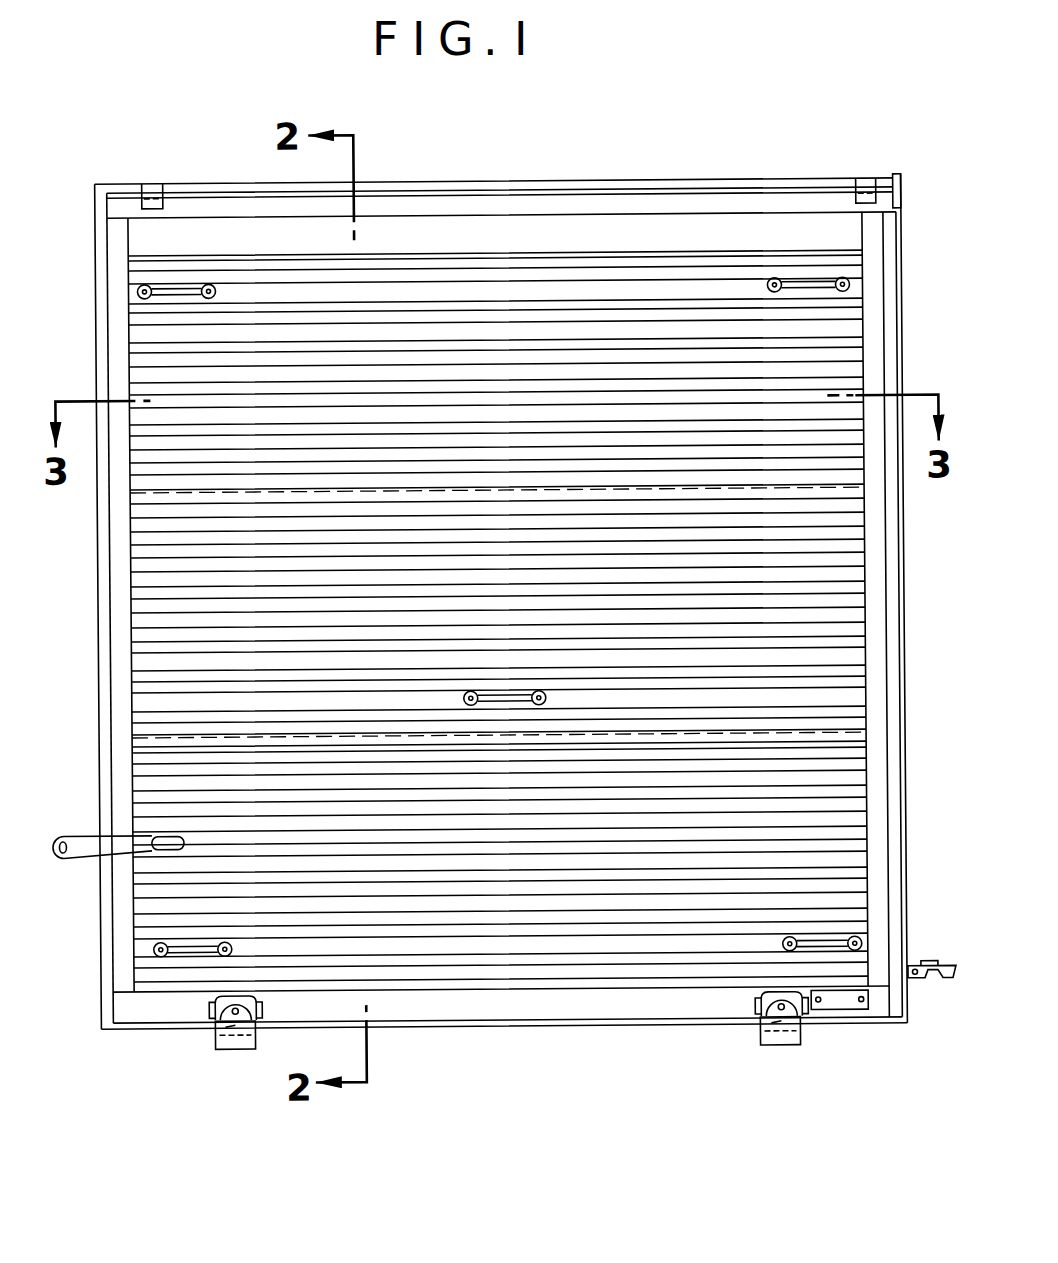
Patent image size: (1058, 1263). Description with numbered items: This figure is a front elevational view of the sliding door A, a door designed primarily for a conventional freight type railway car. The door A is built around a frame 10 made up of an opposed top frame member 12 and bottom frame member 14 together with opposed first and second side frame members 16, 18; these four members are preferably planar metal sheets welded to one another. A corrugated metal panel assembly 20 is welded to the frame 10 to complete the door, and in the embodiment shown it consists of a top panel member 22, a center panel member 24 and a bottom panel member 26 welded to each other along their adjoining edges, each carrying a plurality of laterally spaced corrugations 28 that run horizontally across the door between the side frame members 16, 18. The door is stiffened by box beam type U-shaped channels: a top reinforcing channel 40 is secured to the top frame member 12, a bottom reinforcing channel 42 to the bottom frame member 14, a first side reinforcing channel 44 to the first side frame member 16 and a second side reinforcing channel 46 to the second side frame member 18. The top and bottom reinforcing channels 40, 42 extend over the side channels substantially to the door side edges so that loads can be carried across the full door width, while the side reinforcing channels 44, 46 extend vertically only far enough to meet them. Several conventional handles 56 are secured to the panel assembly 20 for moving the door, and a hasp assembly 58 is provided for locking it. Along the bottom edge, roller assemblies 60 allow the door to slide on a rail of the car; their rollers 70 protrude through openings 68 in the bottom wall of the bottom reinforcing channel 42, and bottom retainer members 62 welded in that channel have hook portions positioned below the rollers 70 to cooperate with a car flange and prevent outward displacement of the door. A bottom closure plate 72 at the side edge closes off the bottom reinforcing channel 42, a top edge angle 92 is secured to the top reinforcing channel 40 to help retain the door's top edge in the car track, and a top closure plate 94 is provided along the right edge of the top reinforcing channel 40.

The sliding door A is at (640, 160).
The frame 10 is at (248, 180).
The top frame member 12 is at (430, 181).
The bottom frame member 14 is at (452, 1028).
The first side frame member 16 is at (109, 526).
The second side frame member 18 is at (893, 652).
The corrugated metal panel assembly 20 is at (192, 606).
The top panel member 22 is at (808, 363).
The center panel member 24 is at (828, 598).
The bottom panel member 26 is at (838, 824).
The corrugations 28 is at (842, 562).
The top reinforcing channel 40 is at (515, 204).
The bottom reinforcing channel 42 is at (533, 1006).
The first side reinforcing channel 44 is at (119, 580).
The second side reinforcing channel 46 is at (875, 710).
The handles 56 is at (820, 938).
The hasp assembly 58 is at (90, 851).
The roller assemblies 60 is at (205, 1036).
The bottom retainer members 62 is at (230, 1047).
The openings 68 is at (212, 1041).
The rollers 70 is at (258, 1027).
The bottom closure plate 72 is at (907, 1005).
The top edge angle 92 is at (152, 178).
The top closure plate 94 is at (905, 190).